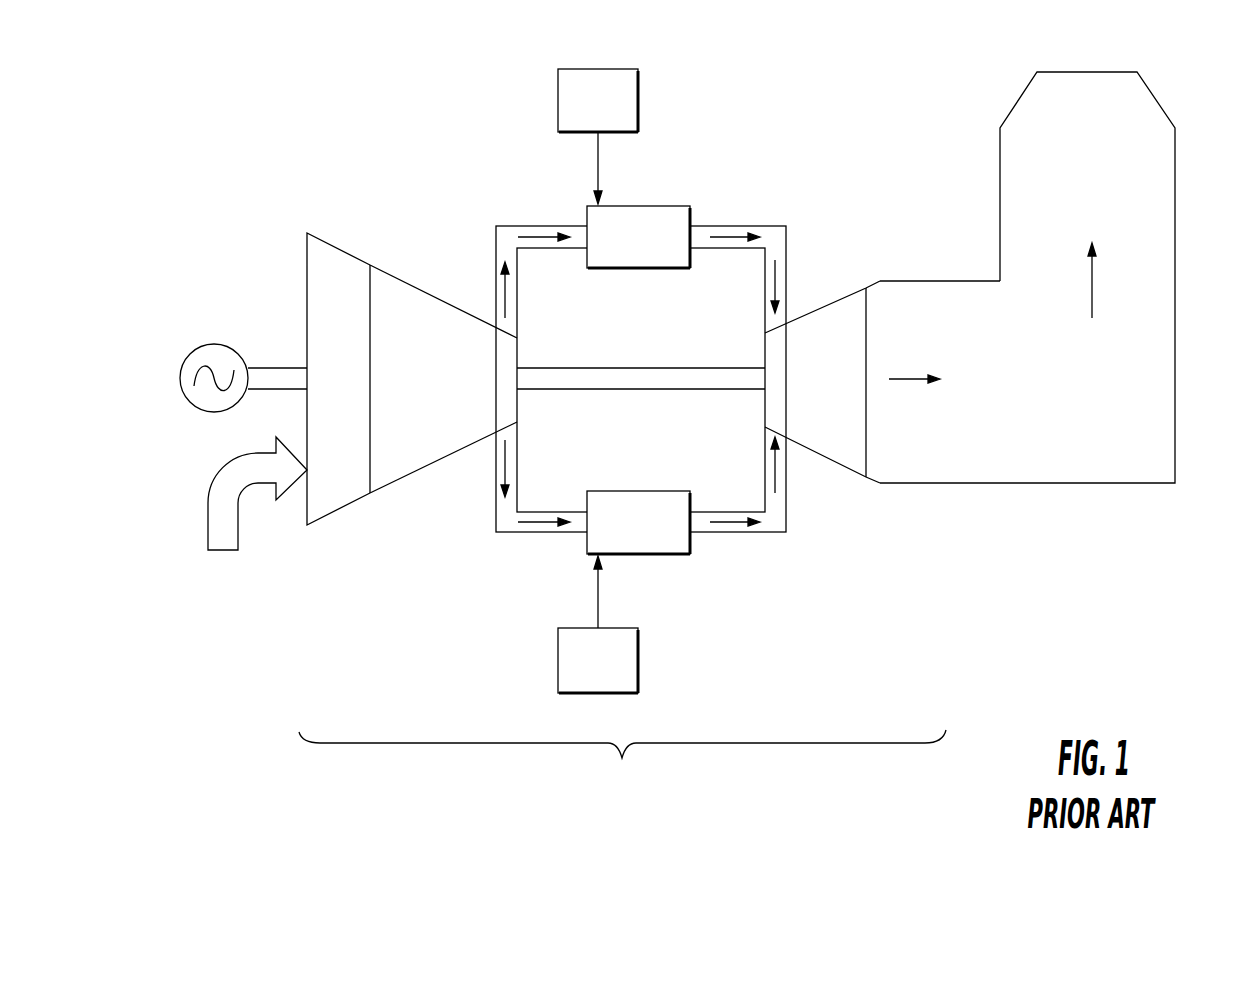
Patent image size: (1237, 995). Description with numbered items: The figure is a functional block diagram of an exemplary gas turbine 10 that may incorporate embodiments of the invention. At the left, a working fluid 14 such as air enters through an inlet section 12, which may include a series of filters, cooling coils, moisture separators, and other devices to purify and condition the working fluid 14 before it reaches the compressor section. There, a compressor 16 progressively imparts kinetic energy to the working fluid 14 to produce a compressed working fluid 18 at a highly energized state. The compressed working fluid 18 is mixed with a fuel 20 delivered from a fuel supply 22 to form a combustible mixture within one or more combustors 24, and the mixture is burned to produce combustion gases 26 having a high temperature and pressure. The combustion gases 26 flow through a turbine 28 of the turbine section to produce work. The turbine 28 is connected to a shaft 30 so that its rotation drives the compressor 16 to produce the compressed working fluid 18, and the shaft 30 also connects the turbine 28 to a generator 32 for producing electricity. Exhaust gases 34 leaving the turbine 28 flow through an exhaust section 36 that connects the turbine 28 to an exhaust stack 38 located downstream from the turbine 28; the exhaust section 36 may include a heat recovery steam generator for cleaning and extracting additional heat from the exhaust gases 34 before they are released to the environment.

The gas turbine 10 is at (622, 768).
The inlet section 12 is at (325, 399).
The working fluid 14 is at (222, 552).
The compressor 16 is at (425, 399).
The compressed working fluid 18 is at (505, 300).
The fuel 20 is at (600, 155).
The fuel supply 22 is at (583, 122).
The combustors 24 is at (623, 257).
The combustion gases 26 is at (784, 288).
The turbine 28 is at (800, 399).
The shaft 30 is at (632, 390).
The generator 32 is at (212, 345).
The exhaust gases 34 is at (907, 380).
The exhaust section 36 is at (1072, 399).
The exhaust stack 38 is at (1177, 177).